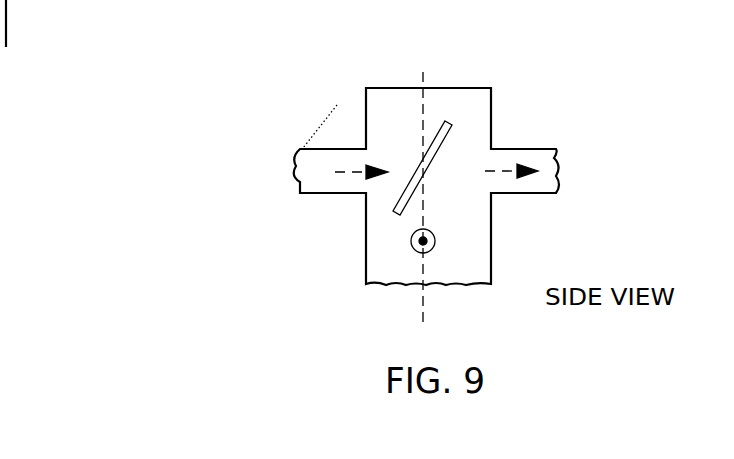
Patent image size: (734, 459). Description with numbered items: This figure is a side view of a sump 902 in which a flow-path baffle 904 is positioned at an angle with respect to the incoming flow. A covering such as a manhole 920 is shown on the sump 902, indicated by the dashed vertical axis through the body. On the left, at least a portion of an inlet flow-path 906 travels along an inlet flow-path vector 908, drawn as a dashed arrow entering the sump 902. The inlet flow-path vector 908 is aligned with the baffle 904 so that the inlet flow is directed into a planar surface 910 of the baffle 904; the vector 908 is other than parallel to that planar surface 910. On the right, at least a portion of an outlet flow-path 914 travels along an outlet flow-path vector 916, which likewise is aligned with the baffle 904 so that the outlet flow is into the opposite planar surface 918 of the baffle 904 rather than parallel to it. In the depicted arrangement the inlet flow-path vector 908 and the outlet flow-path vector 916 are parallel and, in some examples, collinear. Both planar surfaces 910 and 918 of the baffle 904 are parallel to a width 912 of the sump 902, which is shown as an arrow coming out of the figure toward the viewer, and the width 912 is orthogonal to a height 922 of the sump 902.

The sump 902 is at (363, 92).
The flow-path baffle 904 is at (452, 121).
The inlet flow-path 906 is at (323, 150).
The inlet flow-path vector 908 is at (347, 173).
The planar surface 910 is at (417, 172).
The width 912 is at (435, 243).
The outlet flow-path 914 is at (555, 147).
The outlet flow-path vector 916 is at (508, 173).
The planar surface 918 is at (437, 151).
The manhole 920 is at (413, 87).
The height 922 is at (423, 303).